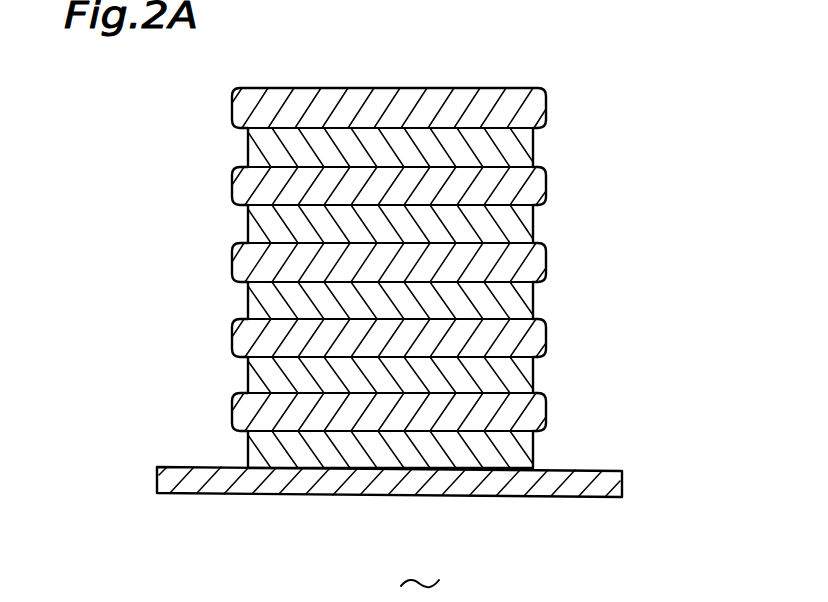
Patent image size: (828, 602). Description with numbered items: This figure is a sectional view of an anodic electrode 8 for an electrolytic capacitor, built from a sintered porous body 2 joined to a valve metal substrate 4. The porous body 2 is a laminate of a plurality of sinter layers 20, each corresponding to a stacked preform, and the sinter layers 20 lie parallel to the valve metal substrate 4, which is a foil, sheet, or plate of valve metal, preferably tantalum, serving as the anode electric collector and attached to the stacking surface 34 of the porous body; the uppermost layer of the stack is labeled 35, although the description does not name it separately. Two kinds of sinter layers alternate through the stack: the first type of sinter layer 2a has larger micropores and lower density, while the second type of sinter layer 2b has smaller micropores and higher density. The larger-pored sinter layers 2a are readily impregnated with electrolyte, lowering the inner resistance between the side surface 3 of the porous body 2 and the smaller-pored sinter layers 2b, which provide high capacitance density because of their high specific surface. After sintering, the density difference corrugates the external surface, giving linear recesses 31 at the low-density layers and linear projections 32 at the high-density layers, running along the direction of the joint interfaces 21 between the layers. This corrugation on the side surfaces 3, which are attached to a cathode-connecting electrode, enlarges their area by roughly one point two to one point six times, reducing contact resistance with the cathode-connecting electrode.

The porous body 2 is at (682, 92).
The first type of sinter layer 2a is at (545, 256).
The second type of sinter layer 2b is at (333, 300).
The side surface 3 is at (208, 237).
The valve metal substrate 4 is at (603, 496).
The electrode 8 is at (420, 563).
The sinter layers 20 is at (530, 405).
The joint interfaces 21 is at (253, 363).
The linear recesses 31 is at (245, 297).
The linear projections 32 is at (238, 330).
The stacking surface 34 is at (362, 495).
The top plate 35 is at (475, 88).